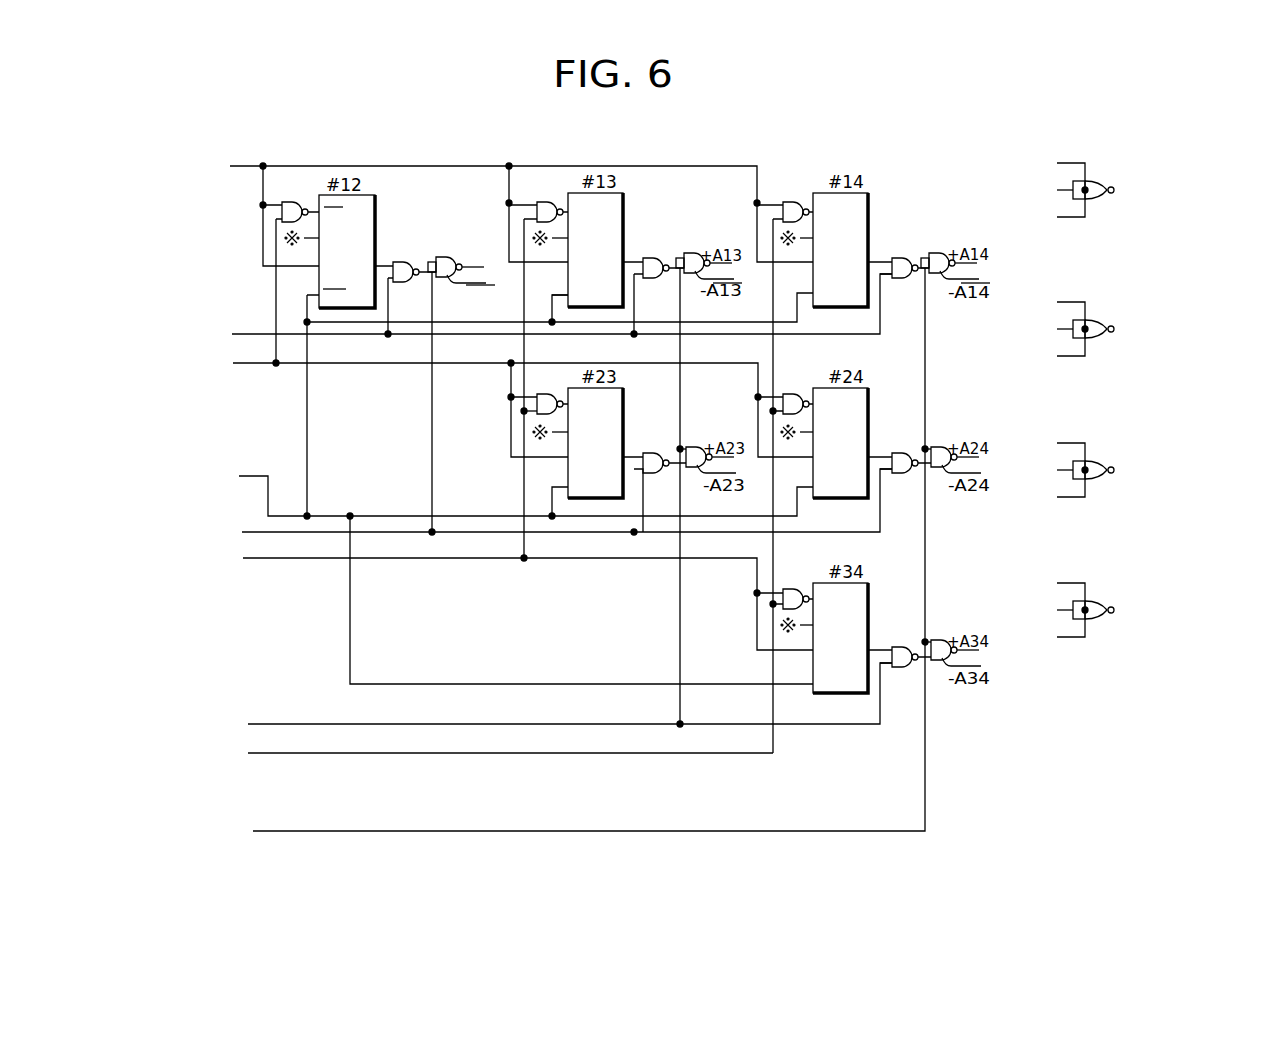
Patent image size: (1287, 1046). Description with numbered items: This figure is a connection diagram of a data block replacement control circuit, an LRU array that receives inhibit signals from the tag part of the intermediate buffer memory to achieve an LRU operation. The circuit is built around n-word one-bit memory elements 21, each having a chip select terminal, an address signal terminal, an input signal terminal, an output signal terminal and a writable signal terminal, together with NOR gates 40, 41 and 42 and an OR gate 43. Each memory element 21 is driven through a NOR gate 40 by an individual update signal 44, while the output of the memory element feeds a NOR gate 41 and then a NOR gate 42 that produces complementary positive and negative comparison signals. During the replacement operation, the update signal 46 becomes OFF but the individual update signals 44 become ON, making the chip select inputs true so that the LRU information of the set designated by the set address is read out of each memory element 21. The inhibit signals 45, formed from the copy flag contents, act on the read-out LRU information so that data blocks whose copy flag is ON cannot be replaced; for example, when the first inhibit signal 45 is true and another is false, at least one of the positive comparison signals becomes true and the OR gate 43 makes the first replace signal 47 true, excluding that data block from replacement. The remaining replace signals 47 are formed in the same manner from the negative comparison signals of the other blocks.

The n-word 1-bit memory element 21 is at (377, 217).
The NOR gate 40 is at (289, 204).
The NOR gate 41 is at (401, 262).
The NOR gate 42 is at (445, 256).
The OR gate 43 is at (1092, 181).
The individual update signal 44 is at (247, 165).
The inhibit signal 45 is at (254, 334).
The update signal 46 is at (261, 476).
The replace signal 47 is at (1110, 185).